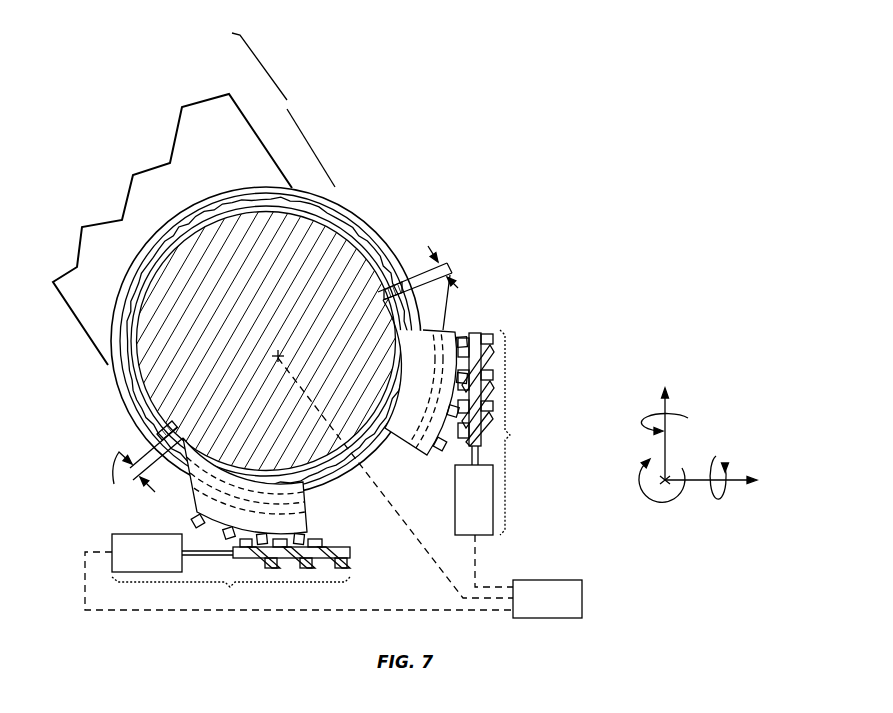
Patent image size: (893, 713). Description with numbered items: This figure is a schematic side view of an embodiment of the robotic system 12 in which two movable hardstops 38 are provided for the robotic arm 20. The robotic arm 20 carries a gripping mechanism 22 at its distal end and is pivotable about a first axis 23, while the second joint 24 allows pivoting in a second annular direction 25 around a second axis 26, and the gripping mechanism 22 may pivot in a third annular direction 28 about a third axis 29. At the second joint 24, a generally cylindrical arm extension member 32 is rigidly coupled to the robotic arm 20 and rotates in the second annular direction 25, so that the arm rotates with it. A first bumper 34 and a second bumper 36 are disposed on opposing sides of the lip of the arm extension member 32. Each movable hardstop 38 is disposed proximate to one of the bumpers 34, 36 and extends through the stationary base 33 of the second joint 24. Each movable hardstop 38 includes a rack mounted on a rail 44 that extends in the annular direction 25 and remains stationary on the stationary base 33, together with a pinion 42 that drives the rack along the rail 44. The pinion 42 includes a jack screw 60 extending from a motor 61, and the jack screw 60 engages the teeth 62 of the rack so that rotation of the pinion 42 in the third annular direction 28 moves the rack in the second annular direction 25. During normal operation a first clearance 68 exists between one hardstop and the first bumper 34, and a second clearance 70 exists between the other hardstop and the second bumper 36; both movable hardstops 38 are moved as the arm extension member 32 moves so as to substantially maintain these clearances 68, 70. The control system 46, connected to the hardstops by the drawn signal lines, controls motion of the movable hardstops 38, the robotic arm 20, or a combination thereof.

The robotic system 12 is at (449, 179).
The robotic arm 20 is at (287, 101).
The gripping mechanism 22 is at (688, 418).
The first axis 23 is at (660, 400).
The second joint 24 is at (112, 412).
The second annular direction 25 is at (644, 486).
The second axis 26 is at (662, 486).
The third annular direction 28 is at (722, 462).
The third axis 29 is at (740, 482).
The arm extension member 32 is at (170, 328).
The stationary base 33 is at (344, 200).
The first bumper 34 is at (410, 272).
The second bumper 36 is at (152, 440).
The movable hardstop 38 is at (322, 527).
The pinion 42 is at (512, 435).
The rail 44 is at (374, 221).
The control system 46 is at (547, 599).
The jack screw 60 is at (482, 444).
The motor 61 is at (493, 502).
The teeth 62 is at (466, 339).
The first clearance 68 is at (458, 288).
The second clearance 70 is at (126, 476).